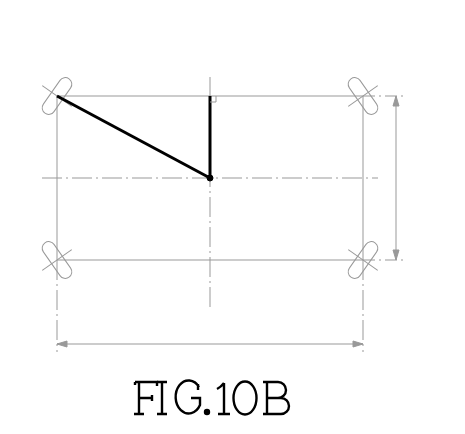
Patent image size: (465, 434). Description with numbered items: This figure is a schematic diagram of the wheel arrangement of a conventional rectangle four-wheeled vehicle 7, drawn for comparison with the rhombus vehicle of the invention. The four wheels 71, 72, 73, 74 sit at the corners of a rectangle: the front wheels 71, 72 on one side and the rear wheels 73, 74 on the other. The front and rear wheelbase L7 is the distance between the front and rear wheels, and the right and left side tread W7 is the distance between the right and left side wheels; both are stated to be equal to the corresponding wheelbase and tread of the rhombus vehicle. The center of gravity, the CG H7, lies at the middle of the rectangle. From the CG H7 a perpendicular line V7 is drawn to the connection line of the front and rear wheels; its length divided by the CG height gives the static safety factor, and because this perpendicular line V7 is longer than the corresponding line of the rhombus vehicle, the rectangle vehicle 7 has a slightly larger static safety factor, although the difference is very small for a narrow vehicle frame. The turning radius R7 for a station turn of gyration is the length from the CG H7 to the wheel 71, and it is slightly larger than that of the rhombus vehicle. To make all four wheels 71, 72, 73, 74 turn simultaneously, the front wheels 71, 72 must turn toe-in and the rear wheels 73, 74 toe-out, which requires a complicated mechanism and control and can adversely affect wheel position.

The rectangle four-wheeled vehicle 7 is at (156, 86).
The front wheel 71 is at (63, 80).
The front wheel 72 is at (48, 258).
The rear wheel 73 is at (352, 80).
The rear wheel 74 is at (352, 278).
The turning radius R7 is at (135, 138).
The perpendicular line V7 is at (213, 133).
The center of gravity (CG) H7 is at (208, 182).
The right and left side tread W7 is at (397, 178).
The front and rear wheelbase L7 is at (210, 306).